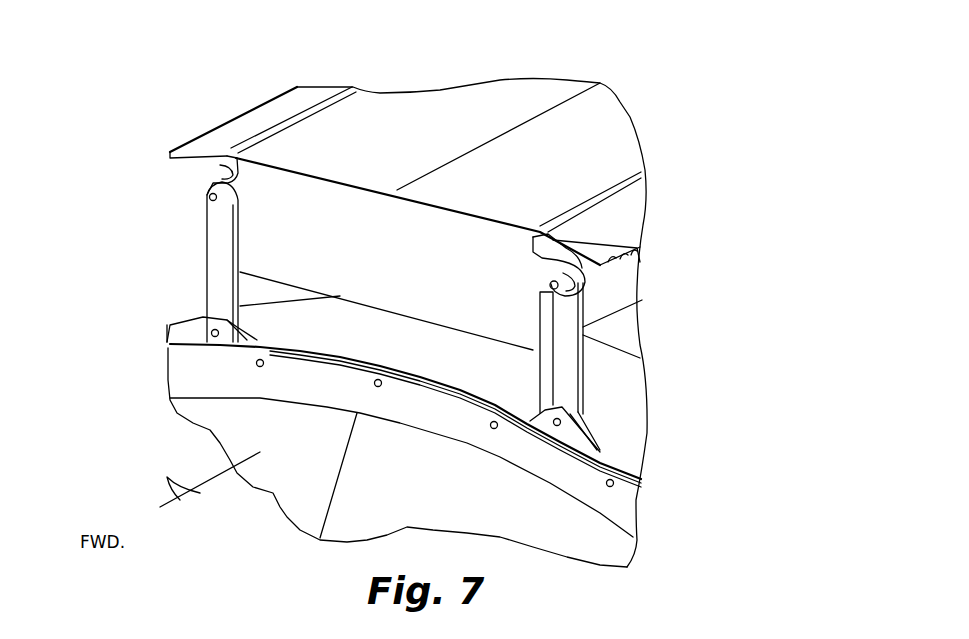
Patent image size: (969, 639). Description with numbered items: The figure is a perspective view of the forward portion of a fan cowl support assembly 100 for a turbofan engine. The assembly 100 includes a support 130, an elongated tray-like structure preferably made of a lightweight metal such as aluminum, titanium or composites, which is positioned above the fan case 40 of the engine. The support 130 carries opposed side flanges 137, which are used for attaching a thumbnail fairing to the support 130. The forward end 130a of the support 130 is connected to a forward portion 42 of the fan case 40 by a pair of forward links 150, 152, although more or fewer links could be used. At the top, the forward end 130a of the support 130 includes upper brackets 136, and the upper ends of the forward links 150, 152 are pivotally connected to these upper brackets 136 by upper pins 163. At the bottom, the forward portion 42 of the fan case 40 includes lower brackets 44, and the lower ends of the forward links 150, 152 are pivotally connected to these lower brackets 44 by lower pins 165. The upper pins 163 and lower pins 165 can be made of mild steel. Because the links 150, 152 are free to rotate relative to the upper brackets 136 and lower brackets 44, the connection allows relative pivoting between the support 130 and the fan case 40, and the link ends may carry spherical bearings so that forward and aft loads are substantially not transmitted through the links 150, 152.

The fan cowl support assembly 100 is at (188, 56).
The fan case 40 is at (620, 355).
The forward portion of the fan case 42 is at (395, 354).
The lower brackets 44 is at (185, 336).
The support 130 is at (237, 237).
The forward end of the support 130a is at (427, 263).
The upper brackets 136 is at (215, 182).
The side flanges 137 is at (223, 137).
The forward link 150 is at (210, 222).
The forward link 152 is at (570, 308).
The upper pins 163 is at (220, 205).
The lower pins 165 is at (212, 325).